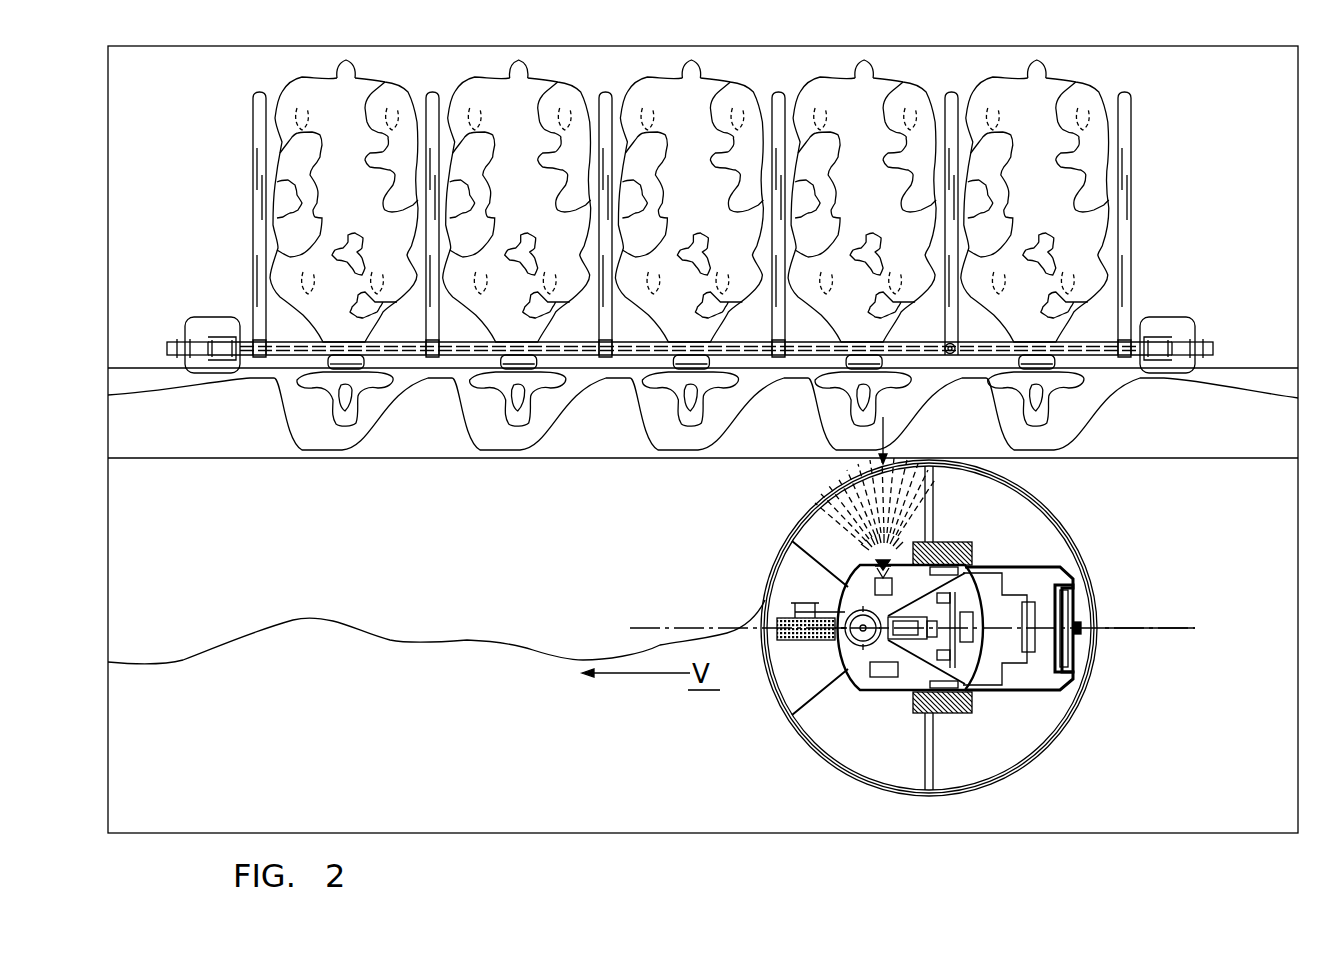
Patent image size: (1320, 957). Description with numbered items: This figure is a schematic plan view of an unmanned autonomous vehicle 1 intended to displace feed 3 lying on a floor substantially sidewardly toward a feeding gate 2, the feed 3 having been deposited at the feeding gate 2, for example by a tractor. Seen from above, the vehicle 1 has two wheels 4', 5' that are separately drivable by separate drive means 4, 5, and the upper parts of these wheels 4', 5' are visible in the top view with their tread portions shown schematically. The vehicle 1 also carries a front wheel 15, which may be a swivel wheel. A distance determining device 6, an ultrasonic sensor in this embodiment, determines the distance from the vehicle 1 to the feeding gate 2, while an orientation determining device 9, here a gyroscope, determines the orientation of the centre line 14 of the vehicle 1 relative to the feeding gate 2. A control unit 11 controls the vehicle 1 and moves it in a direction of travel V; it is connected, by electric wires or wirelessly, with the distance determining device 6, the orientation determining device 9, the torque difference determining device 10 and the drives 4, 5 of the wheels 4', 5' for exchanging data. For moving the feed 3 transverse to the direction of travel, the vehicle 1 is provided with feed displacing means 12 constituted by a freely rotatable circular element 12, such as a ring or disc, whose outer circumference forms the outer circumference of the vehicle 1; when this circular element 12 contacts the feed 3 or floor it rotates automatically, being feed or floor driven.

The unmanned autonomous vehicle 1 is at (1106, 581).
The feeding gate 2 is at (1088, 348).
The feed 3 is at (392, 600).
The drive means 4 is at (1045, 544).
The wheel 4' is at (1039, 526).
The drive means 5 is at (1037, 720).
The wheel 5' is at (1049, 727).
The distance determining device 6 is at (893, 560).
The orientation determining device 9 is at (882, 669).
The torque difference determining device 10 is at (1028, 635).
The control unit 11 is at (967, 627).
The feed displacing means 12 is at (1000, 478).
The centre line 14 is at (1165, 628).
The front wheel 15 is at (750, 663).